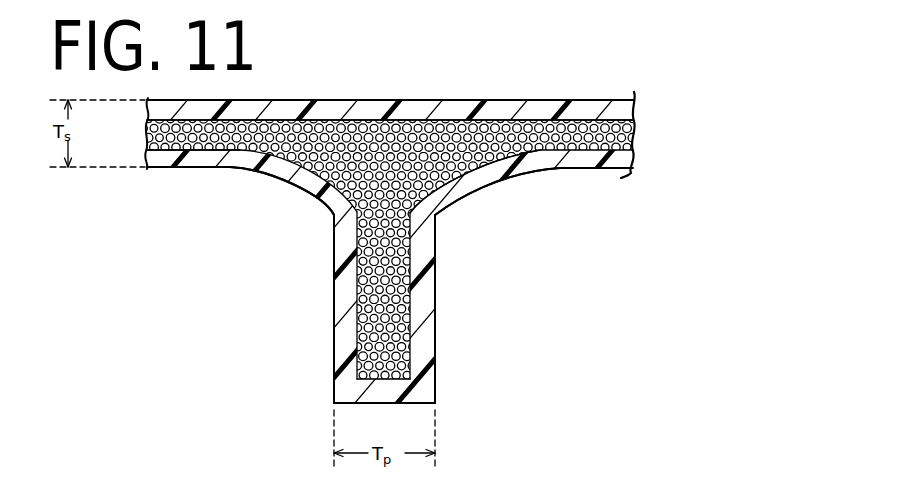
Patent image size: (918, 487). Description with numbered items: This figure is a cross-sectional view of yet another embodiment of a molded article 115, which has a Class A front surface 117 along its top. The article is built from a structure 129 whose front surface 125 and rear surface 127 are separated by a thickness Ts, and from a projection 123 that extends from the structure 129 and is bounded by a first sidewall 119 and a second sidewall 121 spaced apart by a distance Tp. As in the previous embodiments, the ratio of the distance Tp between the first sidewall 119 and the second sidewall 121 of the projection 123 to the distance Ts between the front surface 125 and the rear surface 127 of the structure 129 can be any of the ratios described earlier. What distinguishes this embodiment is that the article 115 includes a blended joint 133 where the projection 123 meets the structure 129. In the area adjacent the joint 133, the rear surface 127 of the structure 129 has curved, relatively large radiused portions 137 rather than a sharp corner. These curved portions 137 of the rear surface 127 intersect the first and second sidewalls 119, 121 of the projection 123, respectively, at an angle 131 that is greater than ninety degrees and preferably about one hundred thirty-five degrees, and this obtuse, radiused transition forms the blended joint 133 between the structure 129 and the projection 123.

The molded article 115 is at (581, 77).
The Class A front surface 117 is at (498, 100).
The first sidewall 119 is at (334, 338).
The second sidewall 121 is at (437, 324).
The projection 123 is at (389, 344).
The front surface 125 is at (180, 99).
The rear surface 127 is at (160, 169).
The structure 129 is at (235, 130).
The angle 131 is at (470, 197).
The blended joint 133 is at (296, 212).
The curved radiused portions 137 is at (279, 180).